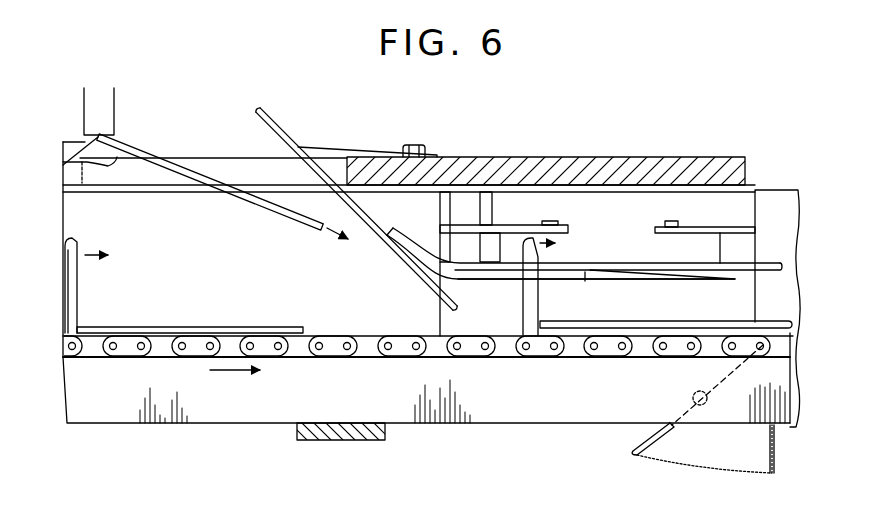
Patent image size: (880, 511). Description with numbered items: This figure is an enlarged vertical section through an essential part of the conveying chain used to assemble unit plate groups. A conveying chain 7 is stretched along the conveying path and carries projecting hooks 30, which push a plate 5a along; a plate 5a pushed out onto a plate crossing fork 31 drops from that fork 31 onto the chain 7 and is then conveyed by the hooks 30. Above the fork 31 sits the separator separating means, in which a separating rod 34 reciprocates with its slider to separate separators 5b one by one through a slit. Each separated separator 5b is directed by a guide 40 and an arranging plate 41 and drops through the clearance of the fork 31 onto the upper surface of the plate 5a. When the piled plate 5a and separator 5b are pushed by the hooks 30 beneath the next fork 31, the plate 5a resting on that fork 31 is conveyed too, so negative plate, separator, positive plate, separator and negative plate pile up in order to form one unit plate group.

The separating rod 34 is at (91, 181).
The separator 5b is at (245, 199).
The guide 40 is at (392, 243).
The hook 30 is at (96, 308).
The plate 5a is at (168, 327).
The plate crossing fork 31 is at (584, 291).
The conveying chain 7 is at (320, 345).
The arranging plate 41 is at (660, 433).